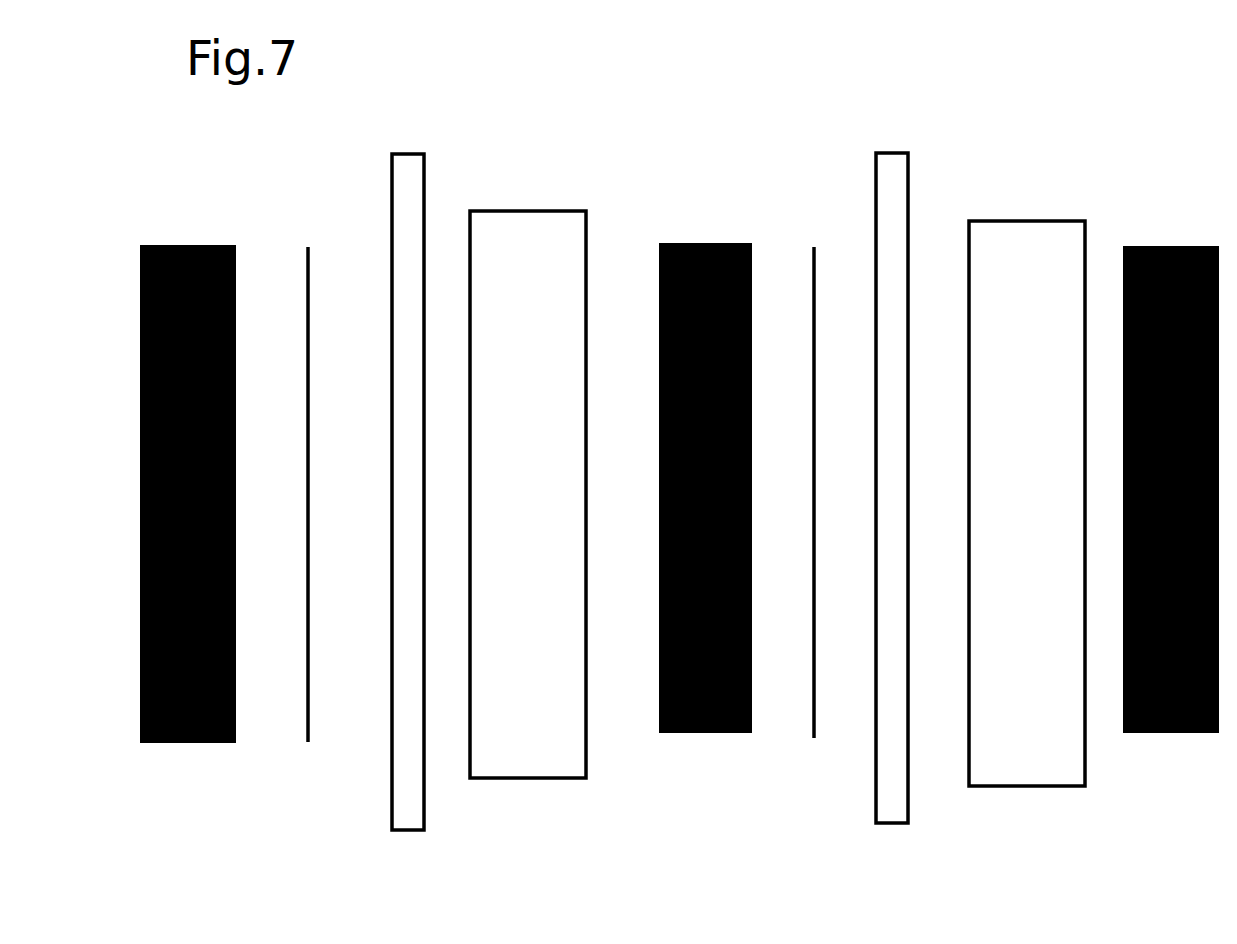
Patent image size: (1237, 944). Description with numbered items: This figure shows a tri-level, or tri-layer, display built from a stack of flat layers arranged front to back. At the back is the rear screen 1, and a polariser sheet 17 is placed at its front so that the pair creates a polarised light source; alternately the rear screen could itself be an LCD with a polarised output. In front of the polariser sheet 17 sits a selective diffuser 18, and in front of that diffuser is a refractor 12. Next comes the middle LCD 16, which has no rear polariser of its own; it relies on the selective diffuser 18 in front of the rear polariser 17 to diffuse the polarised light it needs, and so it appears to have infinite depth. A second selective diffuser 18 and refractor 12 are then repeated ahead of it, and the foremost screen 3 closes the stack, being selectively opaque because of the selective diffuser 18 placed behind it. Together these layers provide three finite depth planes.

The rear screen 1 is at (188, 534).
The foremost screen 3 is at (1171, 532).
The refractor 12 is at (777, 532).
The LCD 16 is at (738, 762).
The polariser sheet 17 is at (313, 534).
The selective diffuser 18 is at (651, 533).